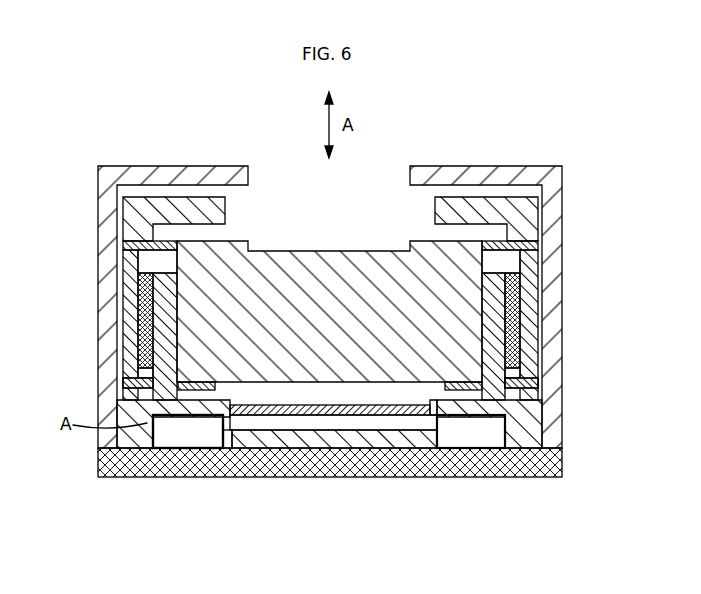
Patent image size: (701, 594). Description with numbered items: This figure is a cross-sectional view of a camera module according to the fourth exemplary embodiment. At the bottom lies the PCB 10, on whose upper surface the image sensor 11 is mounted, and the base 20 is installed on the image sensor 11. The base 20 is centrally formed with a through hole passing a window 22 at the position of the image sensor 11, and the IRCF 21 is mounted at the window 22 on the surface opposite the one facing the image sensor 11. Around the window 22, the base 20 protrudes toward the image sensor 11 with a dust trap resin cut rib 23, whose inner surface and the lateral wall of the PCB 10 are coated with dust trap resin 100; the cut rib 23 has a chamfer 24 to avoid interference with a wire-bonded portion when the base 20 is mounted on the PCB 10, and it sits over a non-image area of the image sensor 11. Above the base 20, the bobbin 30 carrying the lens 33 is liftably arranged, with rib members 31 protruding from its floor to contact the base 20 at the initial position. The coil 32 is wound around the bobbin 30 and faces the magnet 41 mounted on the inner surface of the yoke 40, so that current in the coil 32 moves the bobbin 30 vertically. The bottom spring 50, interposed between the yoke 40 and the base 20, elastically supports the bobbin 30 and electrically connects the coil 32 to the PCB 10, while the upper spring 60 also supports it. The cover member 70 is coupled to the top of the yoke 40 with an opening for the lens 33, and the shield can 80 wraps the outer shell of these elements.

The PCB 10 is at (297, 465).
The image sensor 11 is at (365, 422).
The base 20 is at (222, 420).
The IRCF 21 is at (340, 440).
The window 22 is at (432, 402).
The dust trap resin cut rib 23 is at (240, 432).
The chamfer 24 is at (412, 413).
The bobbin 30 is at (460, 425).
The rib members 31 is at (165, 402).
The coil 32 is at (496, 347).
The lens 33 is at (343, 255).
The yoke 40 is at (135, 282).
The magnet 41 is at (143, 313).
The bottom spring 50 is at (528, 385).
The upper spring 60 is at (545, 247).
The cover member 70 is at (463, 200).
The shield can 80 is at (543, 220).
The dust trap resin 100 is at (203, 416).